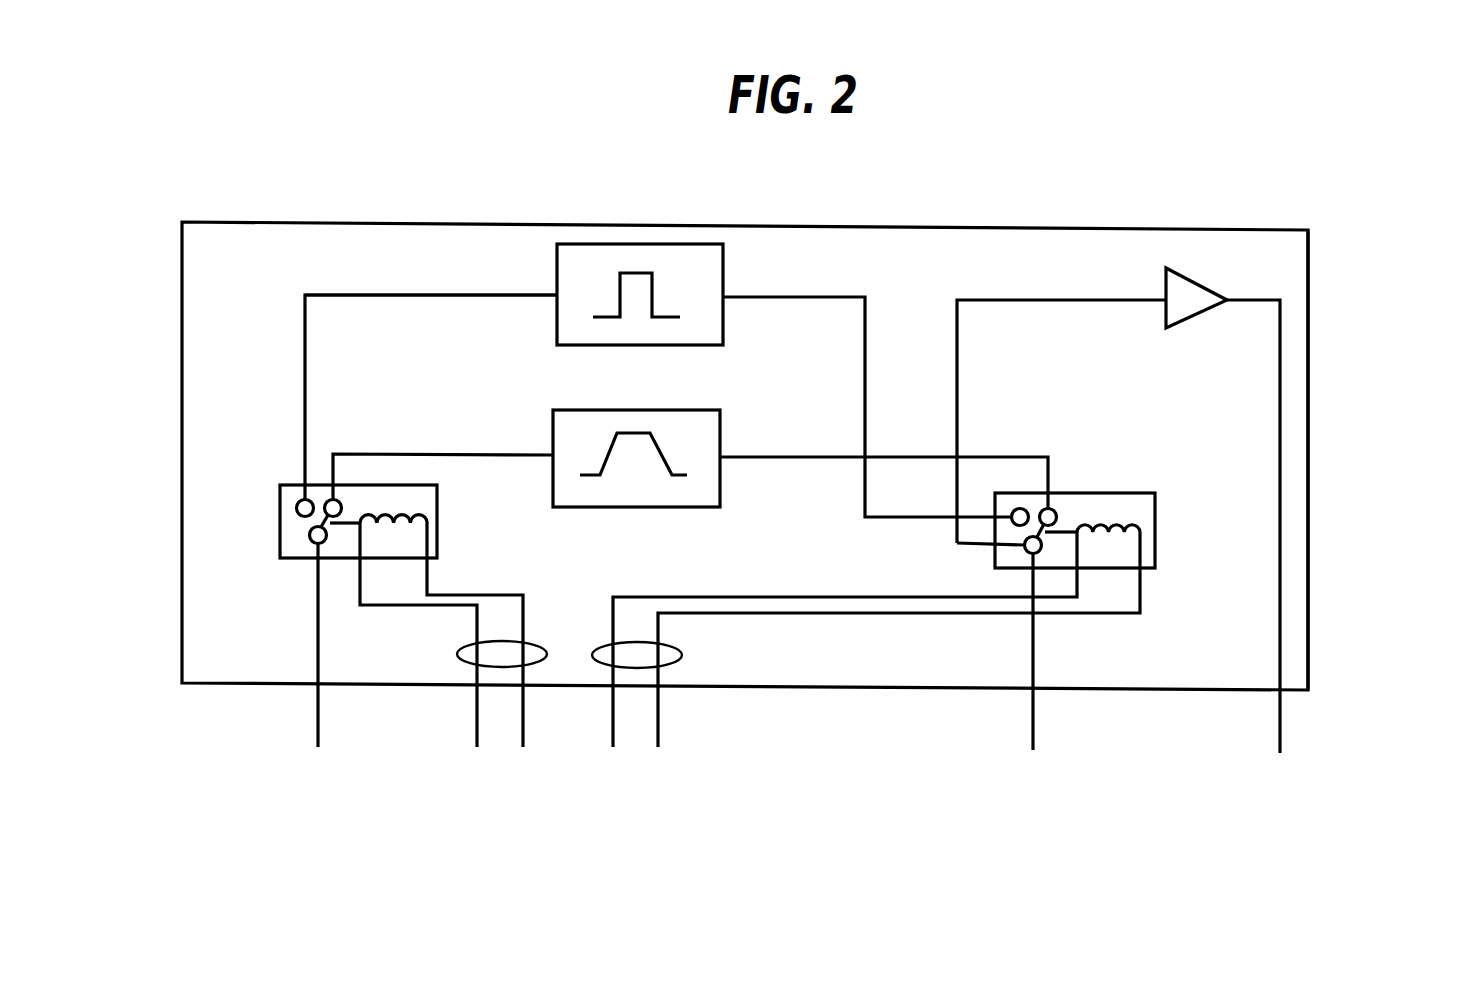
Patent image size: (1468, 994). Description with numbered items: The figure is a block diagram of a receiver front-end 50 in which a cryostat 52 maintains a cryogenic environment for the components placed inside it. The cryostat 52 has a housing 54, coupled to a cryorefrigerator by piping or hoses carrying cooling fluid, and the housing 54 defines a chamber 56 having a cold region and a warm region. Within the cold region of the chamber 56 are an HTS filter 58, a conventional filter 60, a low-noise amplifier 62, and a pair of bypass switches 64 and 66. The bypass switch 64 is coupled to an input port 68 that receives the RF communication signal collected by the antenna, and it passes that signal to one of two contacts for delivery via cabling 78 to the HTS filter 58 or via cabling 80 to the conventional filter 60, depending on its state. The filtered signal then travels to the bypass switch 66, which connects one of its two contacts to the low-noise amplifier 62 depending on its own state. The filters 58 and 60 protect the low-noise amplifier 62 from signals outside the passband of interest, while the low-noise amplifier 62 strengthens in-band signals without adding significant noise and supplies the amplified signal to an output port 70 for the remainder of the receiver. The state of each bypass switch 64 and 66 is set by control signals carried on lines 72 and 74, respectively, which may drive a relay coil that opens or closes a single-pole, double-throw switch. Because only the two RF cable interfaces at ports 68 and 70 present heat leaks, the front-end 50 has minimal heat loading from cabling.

The receiver front-end 50 is at (1380, 407).
The cryostat 52 is at (1310, 252).
The housing 54 is at (1307, 558).
The chamber 56 is at (290, 357).
The HTS filter 58 is at (653, 243).
The conventional filter 60 is at (722, 425).
The low-noise amplifier 62 is at (1198, 283).
The bypass switch 64 is at (280, 512).
The bypass switch 66 is at (1155, 510).
The input port 68 is at (312, 683).
The output port 70 is at (1280, 690).
The control signal lines 72 is at (458, 654).
The control signal lines 74 is at (682, 660).
The cabling 78 is at (432, 295).
The cabling 80 is at (362, 453).